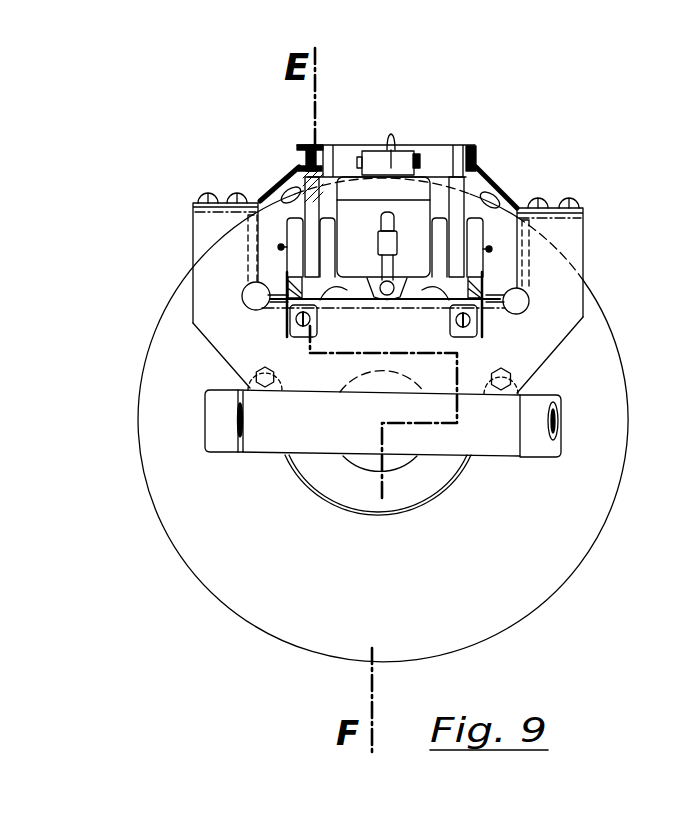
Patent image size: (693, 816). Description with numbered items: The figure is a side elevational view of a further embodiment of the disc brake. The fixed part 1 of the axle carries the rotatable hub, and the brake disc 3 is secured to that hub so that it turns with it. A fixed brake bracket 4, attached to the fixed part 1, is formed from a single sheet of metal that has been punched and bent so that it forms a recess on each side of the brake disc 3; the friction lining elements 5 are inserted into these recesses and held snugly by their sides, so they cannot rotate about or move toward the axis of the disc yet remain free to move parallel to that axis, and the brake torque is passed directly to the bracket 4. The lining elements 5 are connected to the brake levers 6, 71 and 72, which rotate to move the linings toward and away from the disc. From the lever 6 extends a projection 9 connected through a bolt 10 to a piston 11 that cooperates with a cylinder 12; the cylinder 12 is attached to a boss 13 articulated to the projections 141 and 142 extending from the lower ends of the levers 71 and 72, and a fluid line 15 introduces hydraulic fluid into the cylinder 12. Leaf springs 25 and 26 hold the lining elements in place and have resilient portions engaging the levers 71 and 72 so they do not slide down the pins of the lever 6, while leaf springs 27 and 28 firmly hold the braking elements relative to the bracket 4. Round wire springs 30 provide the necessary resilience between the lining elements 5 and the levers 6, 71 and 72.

The fixed part of the axis 1 is at (485, 418).
The brake disc 3 is at (466, 617).
The brake bracket 4 is at (573, 253).
The friction lining elements 5 is at (273, 225).
The brake lever 6 is at (338, 157).
The brake lever 71 is at (297, 170).
The brake lever 72 is at (482, 183).
The projection 9 is at (411, 150).
The bolt 10 is at (420, 163).
The piston 11 is at (372, 155).
The cylinder 12 is at (410, 220).
The boss 13 is at (352, 285).
The projection 141 is at (328, 292).
The projection 142 is at (428, 289).
The fluid line 15 is at (392, 227).
The leaf spring 25 is at (223, 197).
The leaf spring 26 is at (552, 200).
The leaf spring 27 is at (277, 296).
The leaf spring 28 is at (483, 296).
The round wire spring 30 is at (282, 247).